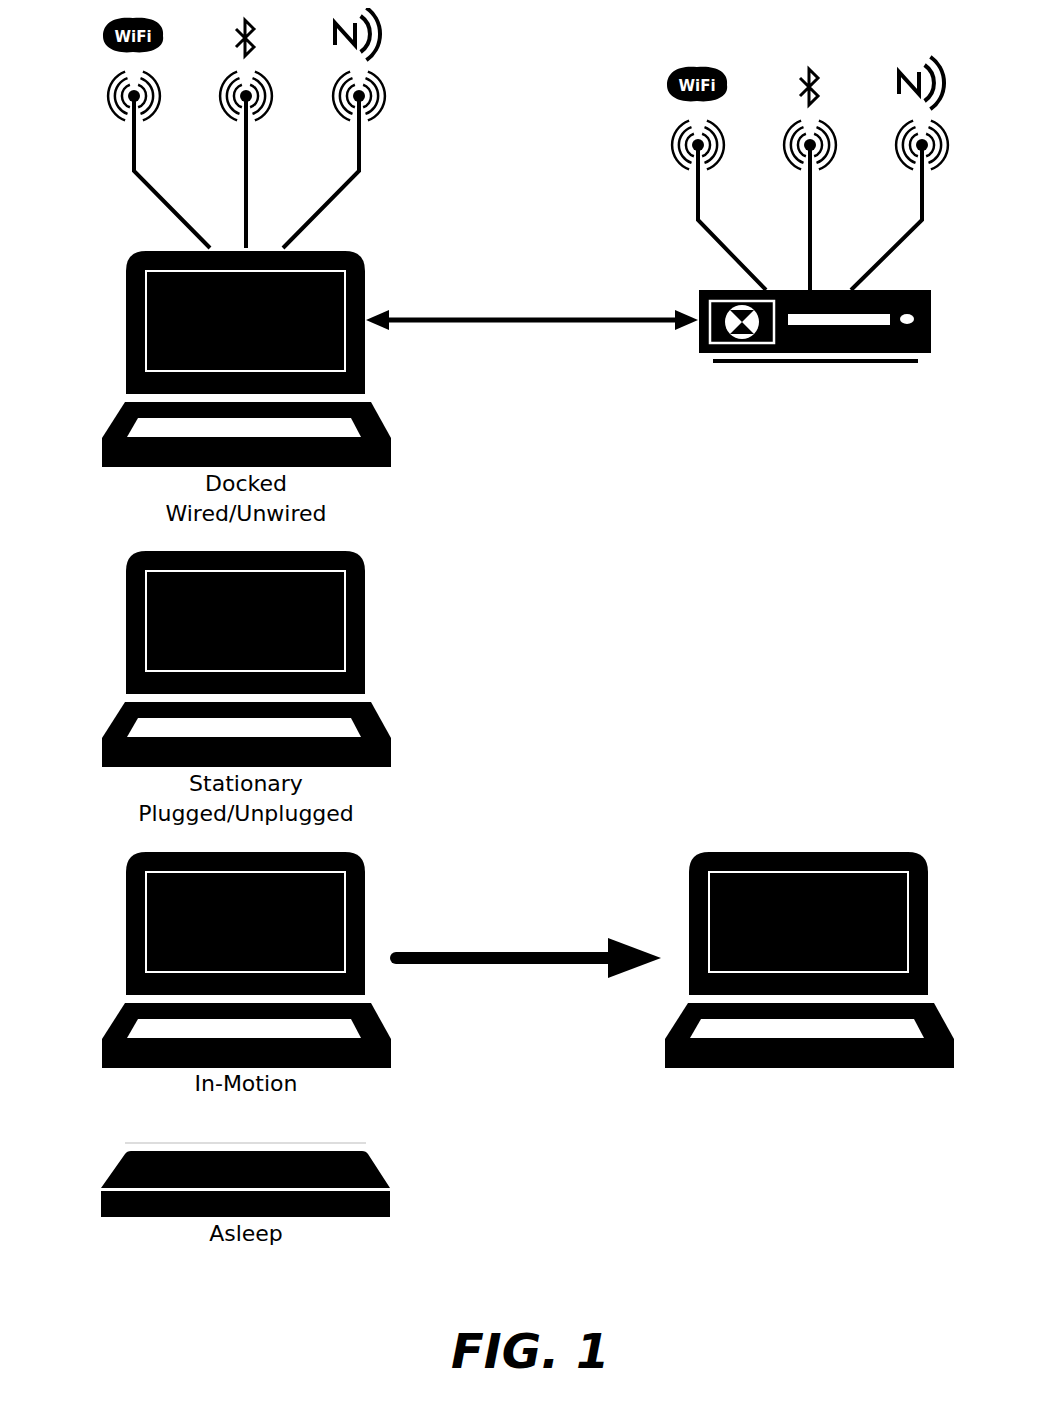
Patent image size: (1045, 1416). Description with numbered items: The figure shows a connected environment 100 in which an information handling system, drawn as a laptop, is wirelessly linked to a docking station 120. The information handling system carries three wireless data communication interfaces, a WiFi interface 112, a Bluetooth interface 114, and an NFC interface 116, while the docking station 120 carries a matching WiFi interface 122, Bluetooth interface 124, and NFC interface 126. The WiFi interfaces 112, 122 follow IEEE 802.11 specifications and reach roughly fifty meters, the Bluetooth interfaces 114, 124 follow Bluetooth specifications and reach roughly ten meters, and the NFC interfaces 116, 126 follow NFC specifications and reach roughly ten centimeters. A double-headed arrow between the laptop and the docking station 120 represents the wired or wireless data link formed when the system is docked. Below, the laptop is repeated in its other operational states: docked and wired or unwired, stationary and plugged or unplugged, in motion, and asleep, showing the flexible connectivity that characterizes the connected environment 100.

The connected environment 100 is at (106, 1314).
The WiFi interface 112 is at (126, 134).
The Bluetooth interface 114 is at (238, 134).
The NFC interface 116 is at (351, 134).
The docking station 120 is at (709, 282).
The WiFi interface 122 is at (690, 183).
The Bluetooth interface 124 is at (802, 183).
The NFC interface 126 is at (914, 183).